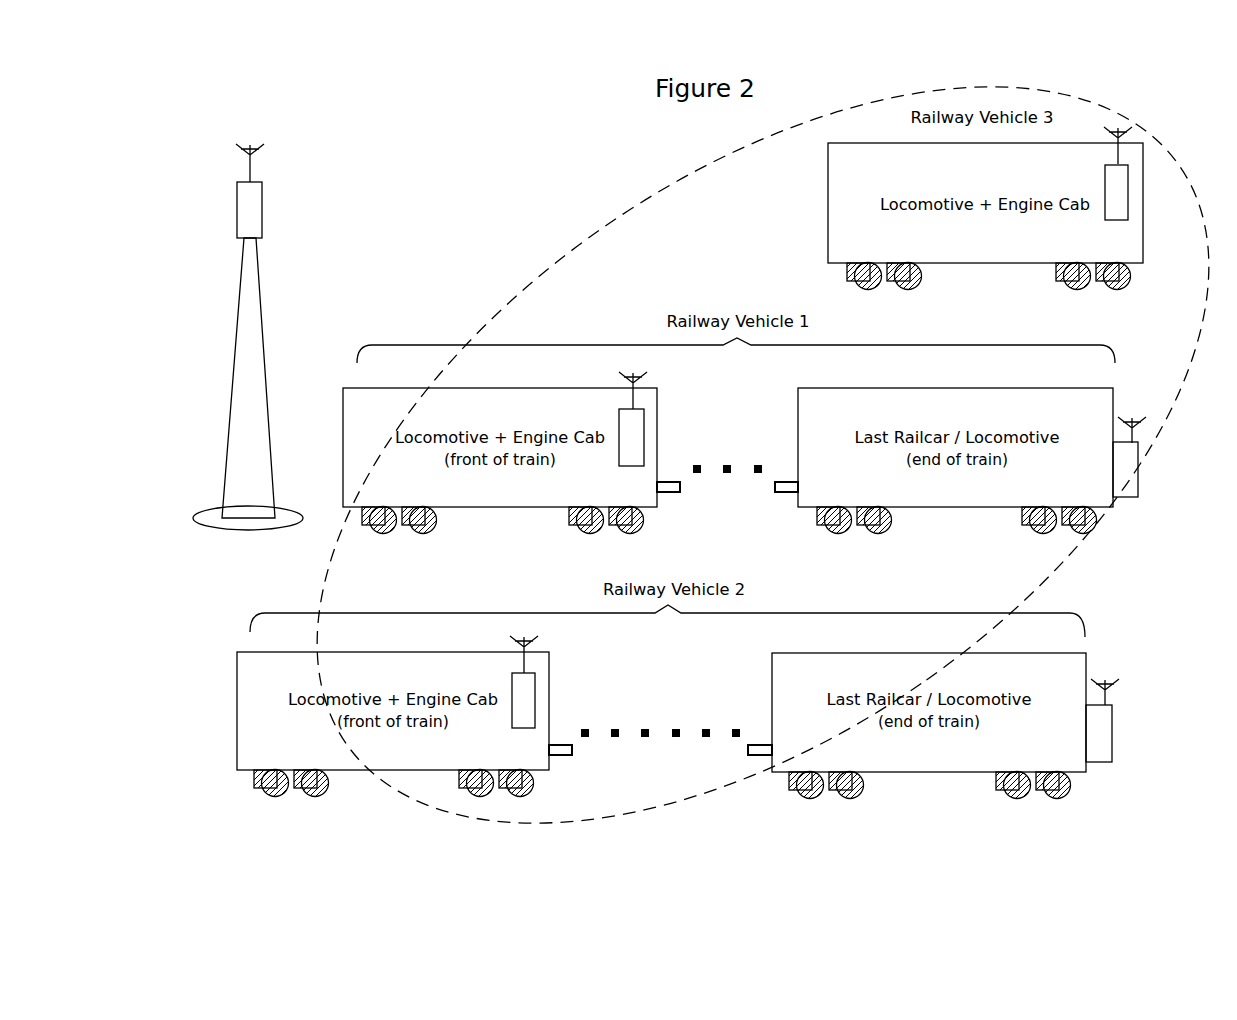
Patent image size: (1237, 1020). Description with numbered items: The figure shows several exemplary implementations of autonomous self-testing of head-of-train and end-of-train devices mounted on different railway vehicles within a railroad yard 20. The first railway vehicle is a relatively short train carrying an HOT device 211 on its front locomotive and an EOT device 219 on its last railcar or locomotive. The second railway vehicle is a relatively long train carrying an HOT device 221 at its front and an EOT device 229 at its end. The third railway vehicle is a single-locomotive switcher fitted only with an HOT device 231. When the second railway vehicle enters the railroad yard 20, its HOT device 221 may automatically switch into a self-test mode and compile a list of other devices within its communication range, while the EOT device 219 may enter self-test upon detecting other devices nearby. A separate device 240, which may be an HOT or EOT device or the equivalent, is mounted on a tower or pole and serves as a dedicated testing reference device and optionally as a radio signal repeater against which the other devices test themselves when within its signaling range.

The railroad yard 20 is at (618, 224).
The HOT device 211 is at (644, 420).
The EOT device 219 is at (1113, 468).
The HOT device 221 is at (535, 685).
The EOT device 229 is at (1086, 733).
The HOT device 231 is at (1128, 178).
The device 240 is at (262, 217).